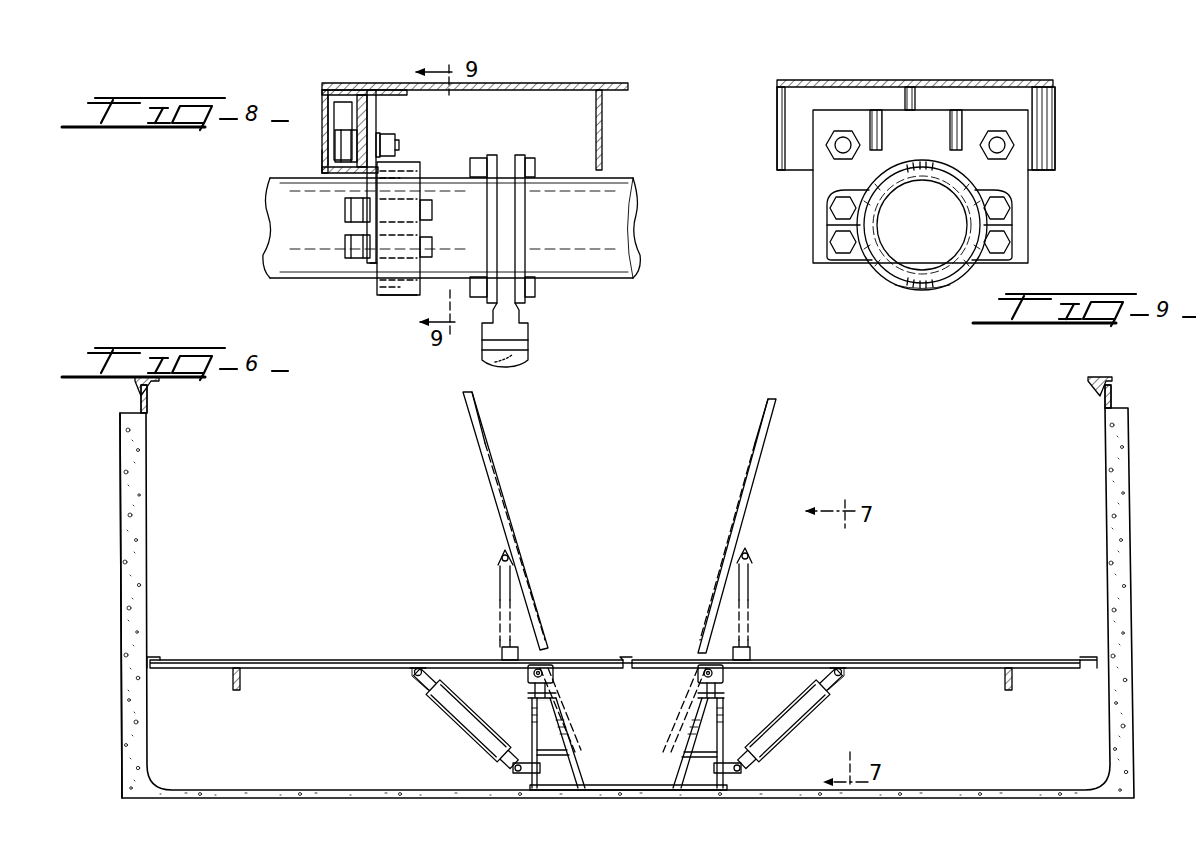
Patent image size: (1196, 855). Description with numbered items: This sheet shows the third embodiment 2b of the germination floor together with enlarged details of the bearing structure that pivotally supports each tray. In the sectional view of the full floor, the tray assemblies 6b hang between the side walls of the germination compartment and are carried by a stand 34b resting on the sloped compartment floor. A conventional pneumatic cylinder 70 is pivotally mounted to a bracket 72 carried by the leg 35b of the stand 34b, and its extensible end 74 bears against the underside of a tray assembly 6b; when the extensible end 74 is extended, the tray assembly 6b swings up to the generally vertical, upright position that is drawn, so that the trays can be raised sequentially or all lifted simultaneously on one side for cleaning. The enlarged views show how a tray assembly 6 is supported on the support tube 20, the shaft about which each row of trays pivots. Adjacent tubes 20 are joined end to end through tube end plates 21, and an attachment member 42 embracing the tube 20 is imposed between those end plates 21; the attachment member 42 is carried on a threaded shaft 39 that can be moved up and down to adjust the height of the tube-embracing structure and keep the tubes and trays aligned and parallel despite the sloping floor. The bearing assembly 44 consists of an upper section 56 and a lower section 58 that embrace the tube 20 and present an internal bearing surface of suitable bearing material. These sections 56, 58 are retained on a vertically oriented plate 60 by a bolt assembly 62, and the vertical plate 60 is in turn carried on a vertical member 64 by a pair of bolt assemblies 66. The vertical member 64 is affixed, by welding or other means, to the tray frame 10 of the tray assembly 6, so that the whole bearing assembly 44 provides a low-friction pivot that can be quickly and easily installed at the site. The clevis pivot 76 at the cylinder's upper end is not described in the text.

In FIG. 8, the tray assembly 6 is at (536, 84).
In FIG. 9, the tray assembly 6 is at (955, 82).
In FIG. 6, the tray assembly 6b is at (362, 660).
In FIG. 6, the third embodiment 2b is at (826, 628).
In FIG. 8, the tray frame 10 is at (322, 150).
In FIG. 8, the support tube 20 is at (598, 200).
In FIG. 9, the support tube 20 is at (965, 246).
In FIG. 8, the tube end plates 21 is at (540, 288).
In FIG. 6, the stand 34b is at (562, 700).
In FIG. 6, the leg 35b is at (520, 702).
In FIG. 8, the threaded shaft 39 is at (520, 355).
In FIG. 8, the attachment member 42 is at (502, 180).
In FIG. 8, the bearing assembly 44 is at (383, 290).
In FIG. 9, the bearing assembly 44 is at (882, 276).
In FIG. 8, the upper section 56 is at (405, 178).
In FIG. 9, the upper section 56 is at (918, 166).
In FIG. 8, the lower section 58 is at (405, 292).
In FIG. 9, the lower section 58 is at (943, 287).
In FIG. 8, the vertical plate 60 is at (372, 127).
In FIG. 9, the vertical plate 60 is at (1010, 184).
In FIG. 8, the bolt assembly 62 is at (343, 210).
In FIG. 9, the bolt assembly 62 is at (1000, 210).
In FIG. 8, the vertical member 64 is at (357, 97).
In FIG. 9, the vertical member 64 is at (1045, 137).
In FIG. 8, the bolt assemblies 66 is at (392, 148).
In FIG. 9, the bolt assemblies 66 is at (1010, 150).
In FIG. 6, the pneumatic cylinder 70 is at (472, 722).
In FIG. 6, the bracket 72 is at (518, 774).
In FIG. 6, the extensible end 74 is at (420, 681).
In FIG. 6, the upper pivot 76 is at (412, 673).